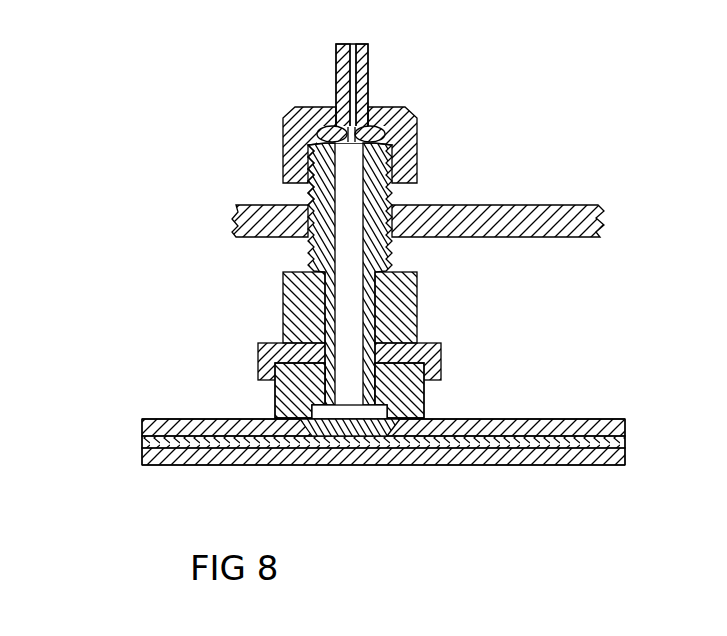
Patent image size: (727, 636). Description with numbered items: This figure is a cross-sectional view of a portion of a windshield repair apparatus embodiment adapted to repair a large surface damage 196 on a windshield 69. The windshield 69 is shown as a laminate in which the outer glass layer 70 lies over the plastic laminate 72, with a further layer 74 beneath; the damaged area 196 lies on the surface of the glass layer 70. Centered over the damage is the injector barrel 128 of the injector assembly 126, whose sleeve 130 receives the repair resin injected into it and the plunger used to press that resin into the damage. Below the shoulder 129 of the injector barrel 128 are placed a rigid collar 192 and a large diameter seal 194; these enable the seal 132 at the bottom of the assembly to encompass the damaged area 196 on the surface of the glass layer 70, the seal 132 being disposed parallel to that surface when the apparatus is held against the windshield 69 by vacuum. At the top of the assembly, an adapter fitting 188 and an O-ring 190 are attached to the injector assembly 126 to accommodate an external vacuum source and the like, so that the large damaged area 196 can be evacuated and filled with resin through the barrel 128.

The windshield 69 is at (104, 429).
The outer glass layer 70 is at (563, 425).
The plastic laminate 72 is at (627, 443).
The inner skin layer 74 is at (565, 468).
The injector assembly 126 is at (452, 304).
The injector barrel 128 is at (307, 252).
The shoulder 129 is at (283, 298).
The sleeve 130 is at (313, 192).
The seal 132 is at (395, 398).
The adapter fitting 188 is at (335, 85).
The O-ring 190 is at (320, 128).
The rigid collar 192 is at (260, 358).
The large diameter seal 194 is at (275, 415).
The large surface damage 196 is at (350, 440).